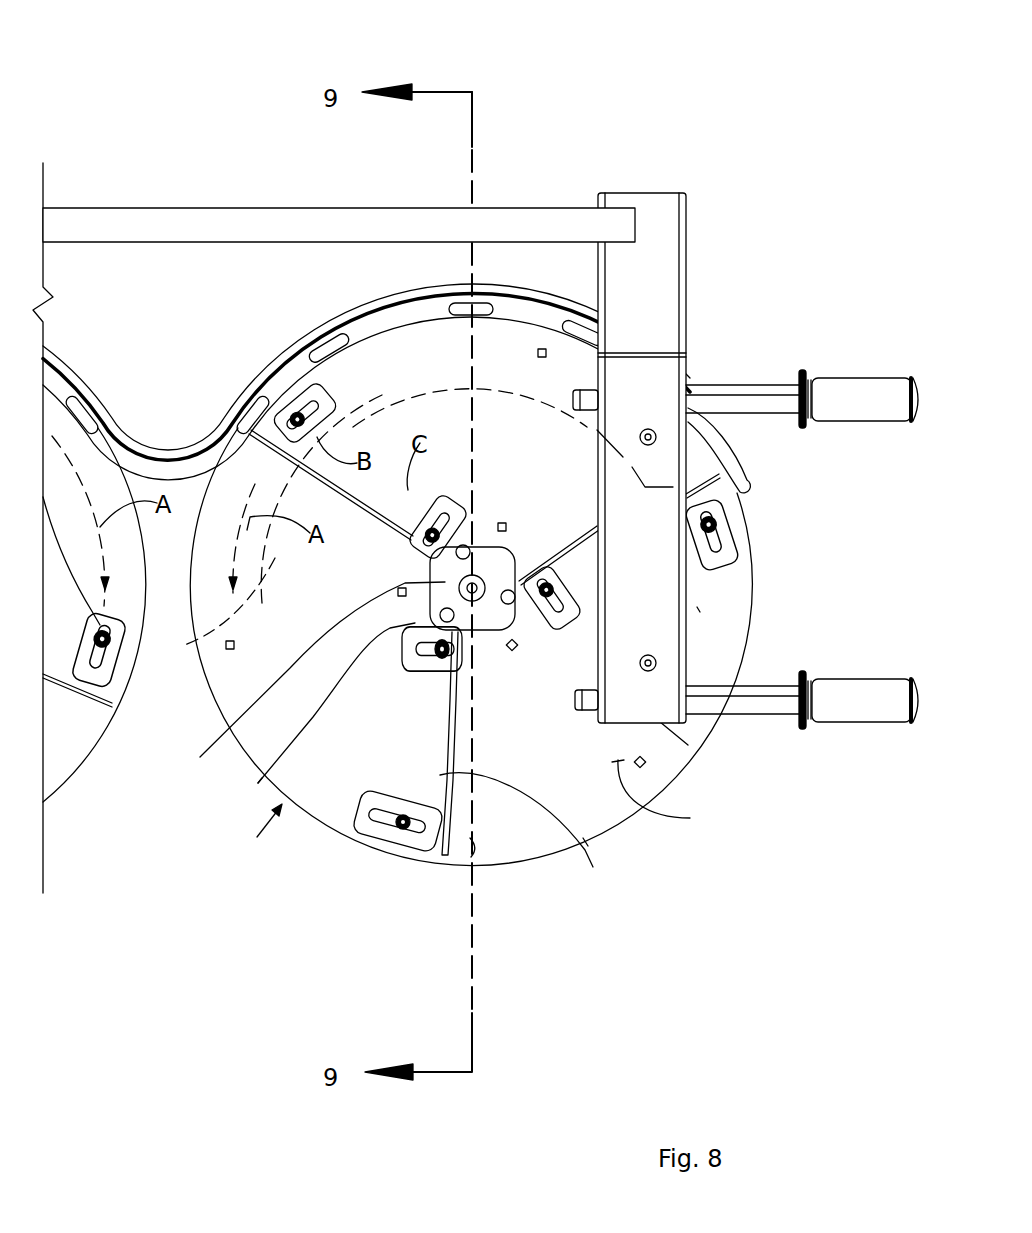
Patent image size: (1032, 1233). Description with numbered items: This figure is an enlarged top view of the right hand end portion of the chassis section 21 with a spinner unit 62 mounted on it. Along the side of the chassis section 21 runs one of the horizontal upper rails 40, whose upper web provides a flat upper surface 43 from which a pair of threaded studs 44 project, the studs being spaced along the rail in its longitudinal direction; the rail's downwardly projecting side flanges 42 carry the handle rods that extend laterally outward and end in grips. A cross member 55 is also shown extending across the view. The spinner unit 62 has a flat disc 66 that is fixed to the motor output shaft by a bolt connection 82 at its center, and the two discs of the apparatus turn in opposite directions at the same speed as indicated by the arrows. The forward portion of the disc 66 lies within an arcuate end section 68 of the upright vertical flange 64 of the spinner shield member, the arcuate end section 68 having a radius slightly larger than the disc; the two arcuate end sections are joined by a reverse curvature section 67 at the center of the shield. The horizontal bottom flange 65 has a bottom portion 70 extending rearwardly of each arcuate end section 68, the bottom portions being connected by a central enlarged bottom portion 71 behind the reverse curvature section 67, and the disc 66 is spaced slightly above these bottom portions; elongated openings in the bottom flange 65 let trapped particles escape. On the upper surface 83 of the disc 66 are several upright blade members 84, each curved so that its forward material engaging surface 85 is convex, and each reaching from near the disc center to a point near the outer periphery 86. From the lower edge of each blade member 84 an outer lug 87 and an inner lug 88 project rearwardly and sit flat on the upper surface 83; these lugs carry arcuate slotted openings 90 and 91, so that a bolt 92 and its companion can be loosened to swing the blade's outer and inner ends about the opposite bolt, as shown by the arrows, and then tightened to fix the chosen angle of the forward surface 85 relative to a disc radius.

The chassis section 21 is at (722, 165).
The upper rail 40 is at (652, 376).
The side flange 42 is at (700, 608).
The upper surface 43 is at (690, 740).
The threaded stud 44 is at (657, 427).
The cross bar 55 is at (172, 230).
The spinner unit 62 is at (122, 768).
The upright vertical flange 64 is at (340, 320).
The horizontal bottom flange 65 is at (133, 483).
The flat disc 66 is at (258, 832).
The reverse curvature section 67 is at (165, 448).
The arcuate end section 68 is at (425, 292).
The bottom portion 70 is at (532, 310).
The central enlarged bottom portion 71 is at (165, 617).
The bolt connection 82 is at (200, 757).
The upper surface 83 is at (682, 818).
The blade member 84 is at (750, 522).
The forward material engaging surface 85 is at (82, 680).
The outer periphery 86 is at (520, 860).
The outer lug 87 is at (418, 838).
The inner lug 88 is at (425, 660).
The slotted opening 90 is at (356, 812).
The slotted opening 91 is at (263, 778).
The bolt 92 is at (393, 830).